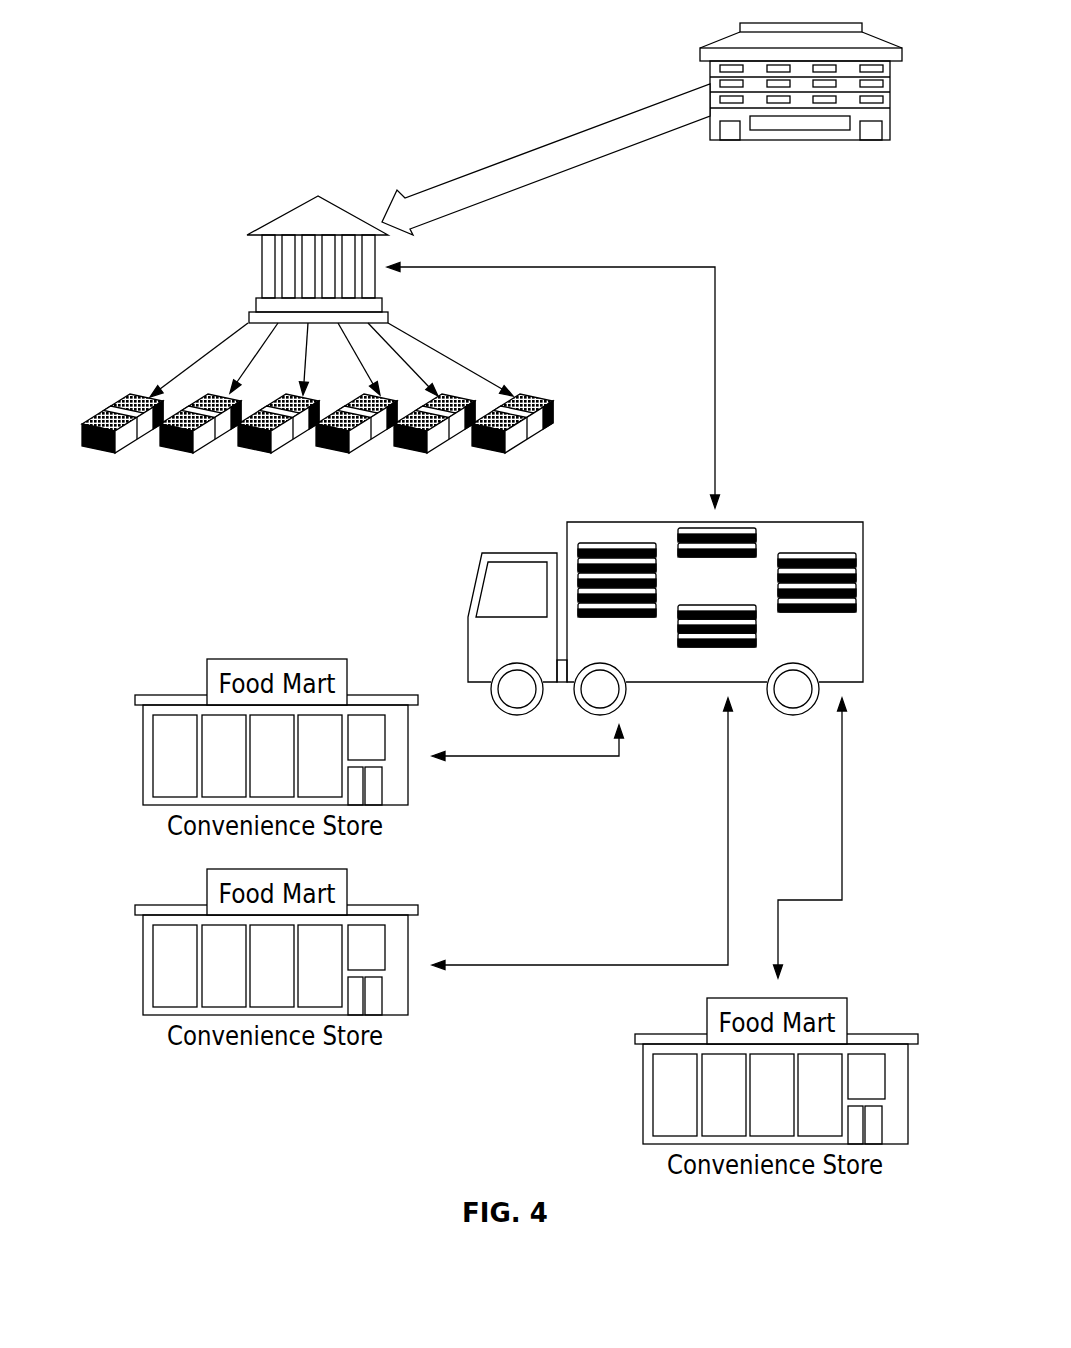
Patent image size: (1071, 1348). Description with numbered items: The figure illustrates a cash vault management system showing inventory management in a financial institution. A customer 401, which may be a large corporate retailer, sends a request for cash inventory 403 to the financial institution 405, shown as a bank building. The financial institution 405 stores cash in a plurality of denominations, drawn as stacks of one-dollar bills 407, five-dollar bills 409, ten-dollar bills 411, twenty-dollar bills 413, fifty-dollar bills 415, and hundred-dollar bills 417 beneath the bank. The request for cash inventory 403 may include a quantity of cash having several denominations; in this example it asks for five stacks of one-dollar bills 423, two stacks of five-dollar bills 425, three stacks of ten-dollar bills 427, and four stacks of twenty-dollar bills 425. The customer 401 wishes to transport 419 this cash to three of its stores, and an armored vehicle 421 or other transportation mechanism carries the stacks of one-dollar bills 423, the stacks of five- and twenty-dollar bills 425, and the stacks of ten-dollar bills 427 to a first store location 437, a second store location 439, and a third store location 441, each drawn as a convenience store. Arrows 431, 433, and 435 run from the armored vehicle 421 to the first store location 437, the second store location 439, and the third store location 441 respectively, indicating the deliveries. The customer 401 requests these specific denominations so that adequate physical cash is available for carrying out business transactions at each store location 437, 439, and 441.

The customer 401 is at (722, 38).
The request for cash inventory 403 is at (562, 172).
The financial institution 405 is at (262, 272).
The $1 denomination 407 is at (82, 432).
The $5 denomination 409 is at (160, 432).
The $10 denomination 411 is at (238, 432).
The $20 denomination 413 is at (316, 432).
The $50 denomination 415 is at (394, 432).
The $100 denomination 417 is at (472, 432).
The transport 419 is at (652, 267).
The armored vehicle 421 is at (803, 522).
The stacks of $1 423 is at (625, 543).
The stacks of $5 and $20 425 is at (697, 532).
The stacks of $10 427 is at (683, 648).
The delivery to first convenience store 431 is at (522, 758).
The delivery to second convenience store 433 is at (513, 967).
The delivery to third convenience store 435 is at (842, 805).
The first store location 437 is at (143, 755).
The second store location 439 is at (143, 965).
The third store location 441 is at (643, 1094).